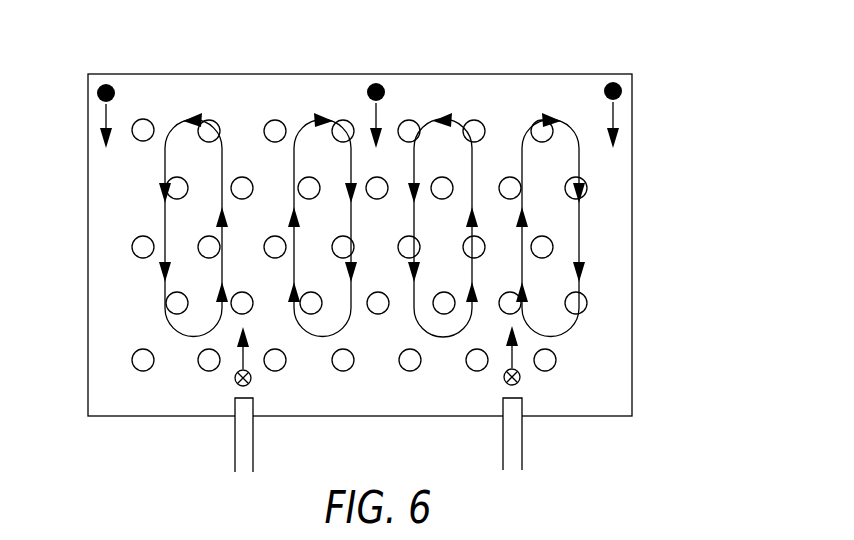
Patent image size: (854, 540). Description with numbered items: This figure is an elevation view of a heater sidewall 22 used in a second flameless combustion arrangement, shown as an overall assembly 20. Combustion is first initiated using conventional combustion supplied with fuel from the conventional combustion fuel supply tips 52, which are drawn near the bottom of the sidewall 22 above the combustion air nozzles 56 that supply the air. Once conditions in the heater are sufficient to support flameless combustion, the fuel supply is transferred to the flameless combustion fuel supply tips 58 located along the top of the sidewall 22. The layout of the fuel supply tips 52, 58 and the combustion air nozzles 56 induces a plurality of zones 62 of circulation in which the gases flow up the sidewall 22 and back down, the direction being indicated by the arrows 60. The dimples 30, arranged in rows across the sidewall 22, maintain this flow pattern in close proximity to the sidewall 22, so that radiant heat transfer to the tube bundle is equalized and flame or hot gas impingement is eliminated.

The crystallizer apparatus 20 is at (688, 87).
The sidewall 22 is at (618, 225).
The dimples 30 is at (271, 121).
The conventional combustion fuel supply tips 52 is at (251, 381).
The combustion air nozzles 56 is at (242, 452).
The flameless combustion fuel supply tips 58 is at (103, 81).
The arrows 60 is at (307, 118).
The zones of circulation 62 is at (185, 155).